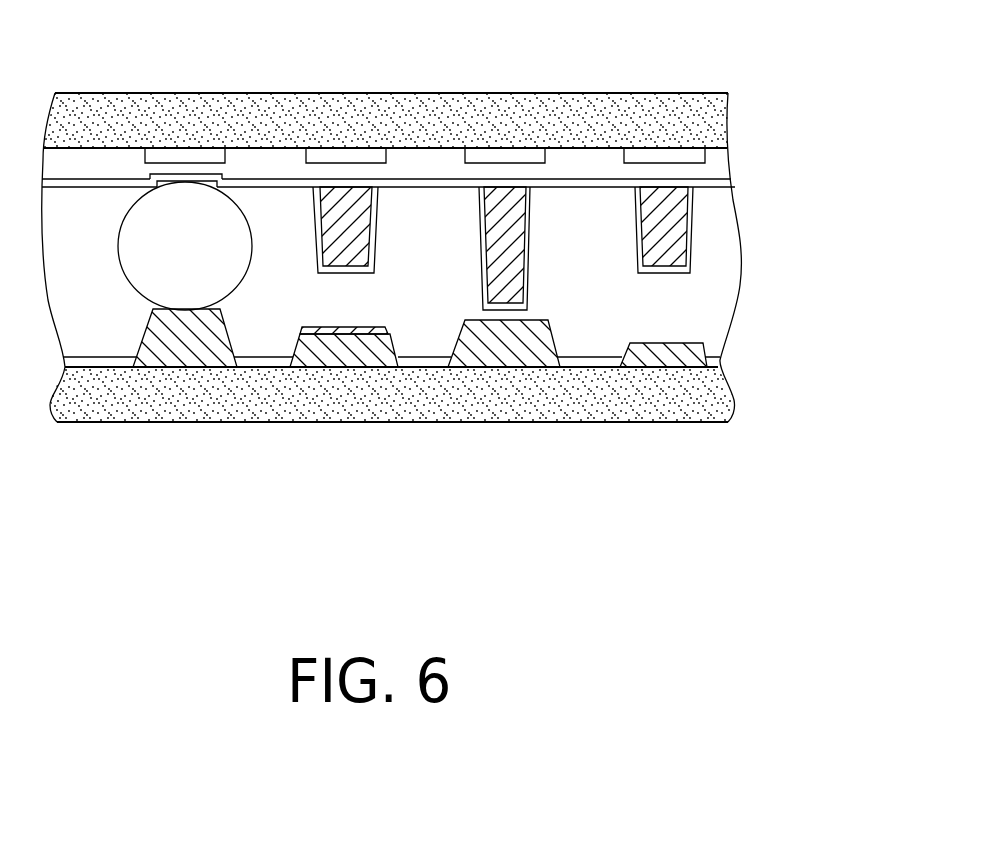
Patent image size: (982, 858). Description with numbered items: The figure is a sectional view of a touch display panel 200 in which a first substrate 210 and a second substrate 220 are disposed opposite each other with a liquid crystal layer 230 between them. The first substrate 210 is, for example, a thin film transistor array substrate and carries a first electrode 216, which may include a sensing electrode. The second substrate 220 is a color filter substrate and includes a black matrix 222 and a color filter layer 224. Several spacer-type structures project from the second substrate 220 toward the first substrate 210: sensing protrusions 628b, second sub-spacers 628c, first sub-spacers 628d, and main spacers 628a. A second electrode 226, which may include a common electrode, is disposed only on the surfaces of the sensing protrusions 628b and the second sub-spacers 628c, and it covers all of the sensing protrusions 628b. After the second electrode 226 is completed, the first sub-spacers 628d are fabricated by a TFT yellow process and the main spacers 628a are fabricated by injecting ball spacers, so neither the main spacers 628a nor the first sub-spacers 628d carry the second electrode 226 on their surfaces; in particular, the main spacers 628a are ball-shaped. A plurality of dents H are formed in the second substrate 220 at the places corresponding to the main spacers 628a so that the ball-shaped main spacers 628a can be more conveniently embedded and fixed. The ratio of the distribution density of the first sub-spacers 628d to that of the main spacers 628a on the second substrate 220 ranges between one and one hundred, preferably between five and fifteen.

The touch display panel 200 is at (441, 283).
The first substrate 210 is at (693, 393).
The first electrode 216 is at (302, 329).
The second substrate 220 is at (703, 126).
The black matrix 222 is at (682, 154).
The color filter layer 224 is at (707, 169).
The second electrode 226 is at (690, 248).
The liquid crystal layer 230 is at (703, 320).
The main spacer 628a is at (175, 223).
The sensing protrusion 628b is at (340, 222).
The second sub-spacer 628c is at (663, 217).
The first sub-spacer 628d is at (502, 220).
The dent H is at (220, 186).